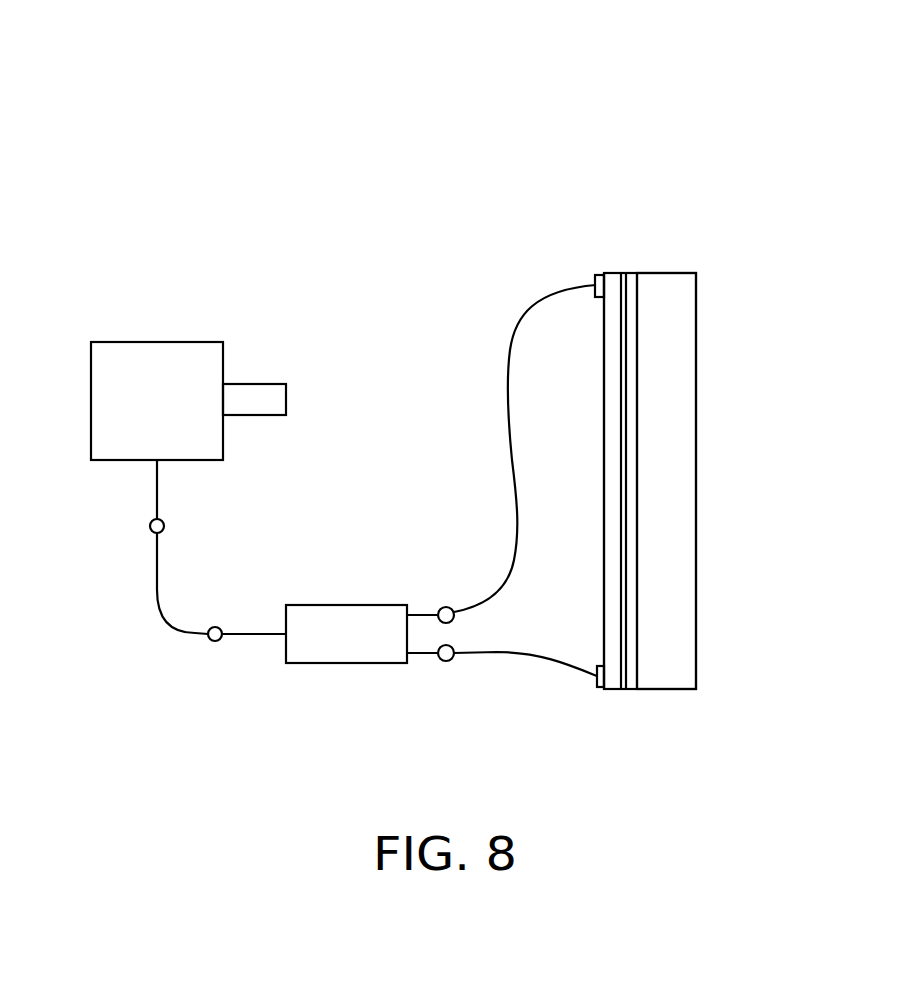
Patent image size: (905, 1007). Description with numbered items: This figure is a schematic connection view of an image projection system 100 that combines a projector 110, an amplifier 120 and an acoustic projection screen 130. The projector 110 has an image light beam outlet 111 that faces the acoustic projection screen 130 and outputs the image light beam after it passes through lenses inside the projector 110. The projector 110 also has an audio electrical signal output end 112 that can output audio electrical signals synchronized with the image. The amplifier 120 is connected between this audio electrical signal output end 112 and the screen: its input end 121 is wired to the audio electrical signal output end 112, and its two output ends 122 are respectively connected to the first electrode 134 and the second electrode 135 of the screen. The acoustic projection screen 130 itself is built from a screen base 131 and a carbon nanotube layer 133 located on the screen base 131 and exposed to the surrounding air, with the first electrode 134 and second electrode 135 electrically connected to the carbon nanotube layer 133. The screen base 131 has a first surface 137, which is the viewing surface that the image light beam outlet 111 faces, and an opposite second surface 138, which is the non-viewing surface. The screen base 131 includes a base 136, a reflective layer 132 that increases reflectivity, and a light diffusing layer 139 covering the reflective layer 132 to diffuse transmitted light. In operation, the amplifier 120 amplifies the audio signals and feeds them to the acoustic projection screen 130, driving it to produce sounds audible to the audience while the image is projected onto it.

The image projection system 100 is at (340, 88).
The projector 110 is at (156, 372).
The image light beam outlet 111 is at (255, 384).
The audio electrical signal output end 112 is at (150, 530).
The amplifier 120 is at (356, 625).
The input end 121 is at (210, 642).
The output ends 122 is at (443, 607).
The acoustic projection screen 130 is at (592, 485).
The screen base 131 is at (763, 197).
The reflective layer 132 is at (640, 277).
The carbon nanotube layer 133 is at (614, 278).
The first electrode 134 is at (596, 684).
The second electrode 135 is at (595, 279).
The base 136 is at (677, 290).
The first surface 137 is at (614, 586).
The second surface 138 is at (703, 411).
The light diffusing layer 139 is at (622, 274).